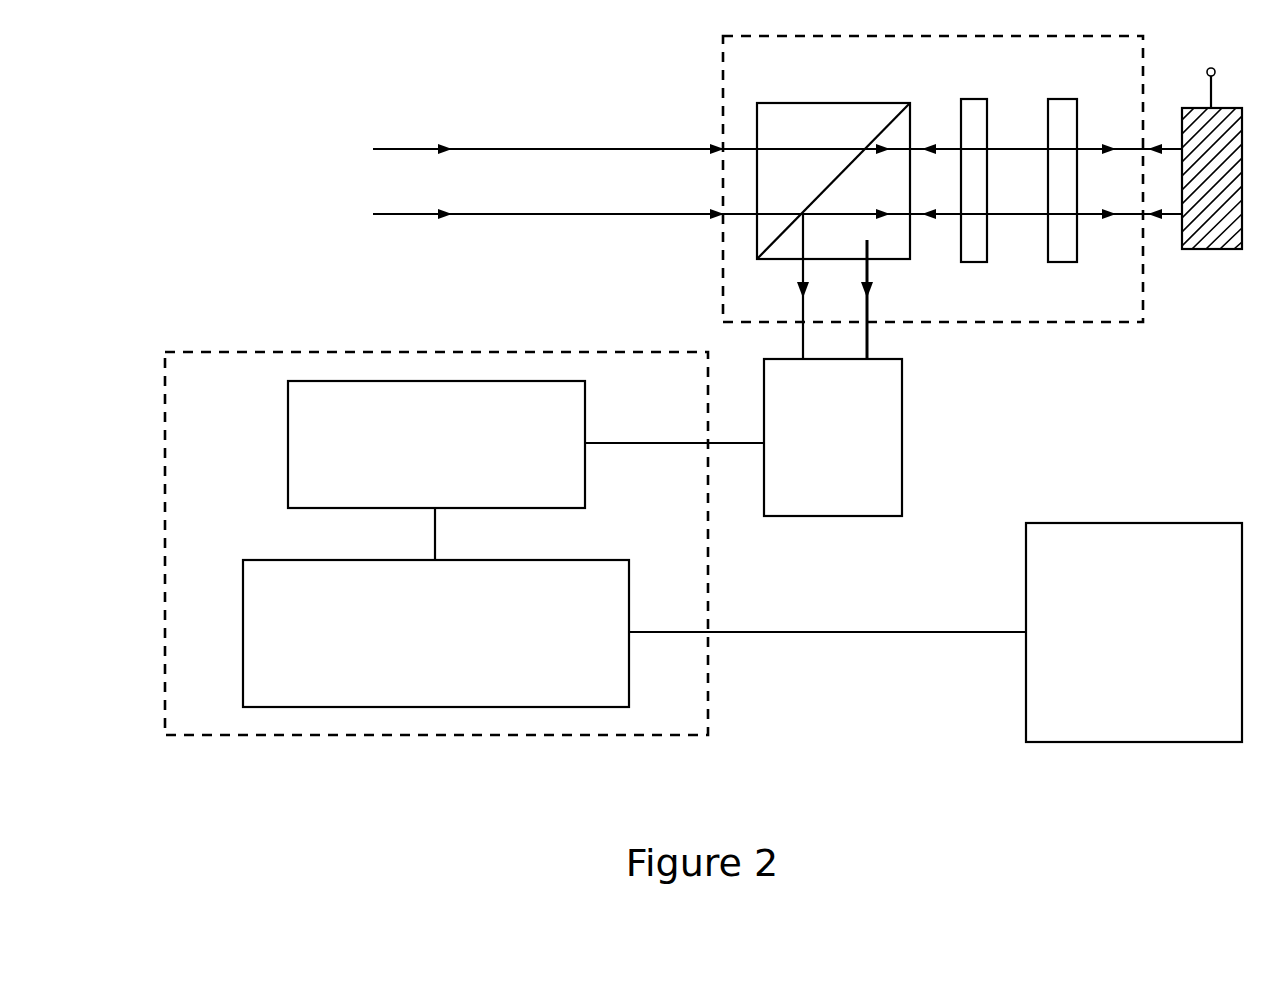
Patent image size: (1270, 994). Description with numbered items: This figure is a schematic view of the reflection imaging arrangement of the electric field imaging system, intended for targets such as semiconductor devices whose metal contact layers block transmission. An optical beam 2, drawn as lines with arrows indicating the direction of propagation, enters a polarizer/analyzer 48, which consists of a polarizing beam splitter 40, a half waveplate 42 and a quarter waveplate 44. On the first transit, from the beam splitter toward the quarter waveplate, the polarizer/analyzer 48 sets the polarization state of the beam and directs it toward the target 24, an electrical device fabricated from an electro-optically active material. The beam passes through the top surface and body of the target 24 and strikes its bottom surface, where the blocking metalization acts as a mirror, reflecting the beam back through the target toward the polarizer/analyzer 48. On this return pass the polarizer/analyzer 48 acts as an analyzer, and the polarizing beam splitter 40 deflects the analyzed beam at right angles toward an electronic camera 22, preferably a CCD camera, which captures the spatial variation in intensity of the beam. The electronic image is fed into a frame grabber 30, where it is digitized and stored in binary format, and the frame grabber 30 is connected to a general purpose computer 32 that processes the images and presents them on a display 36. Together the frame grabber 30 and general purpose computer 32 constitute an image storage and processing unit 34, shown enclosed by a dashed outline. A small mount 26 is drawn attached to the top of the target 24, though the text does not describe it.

The optical beam 2 is at (425, 152).
The electronic camera 22 is at (842, 516).
The target 24 is at (1207, 249).
The sample mount 26 is at (1212, 68).
The frame grabber 30 is at (288, 444).
The general purpose computer 32 is at (272, 560).
The image storage and processing unit 34 is at (445, 735).
The display 36 is at (1150, 742).
The polarizing beam splitter 40 is at (823, 103).
The half waveplate 42 is at (972, 99).
The quarter waveplate 44 is at (1062, 99).
The polarizer/analyzer 48 is at (1042, 322).